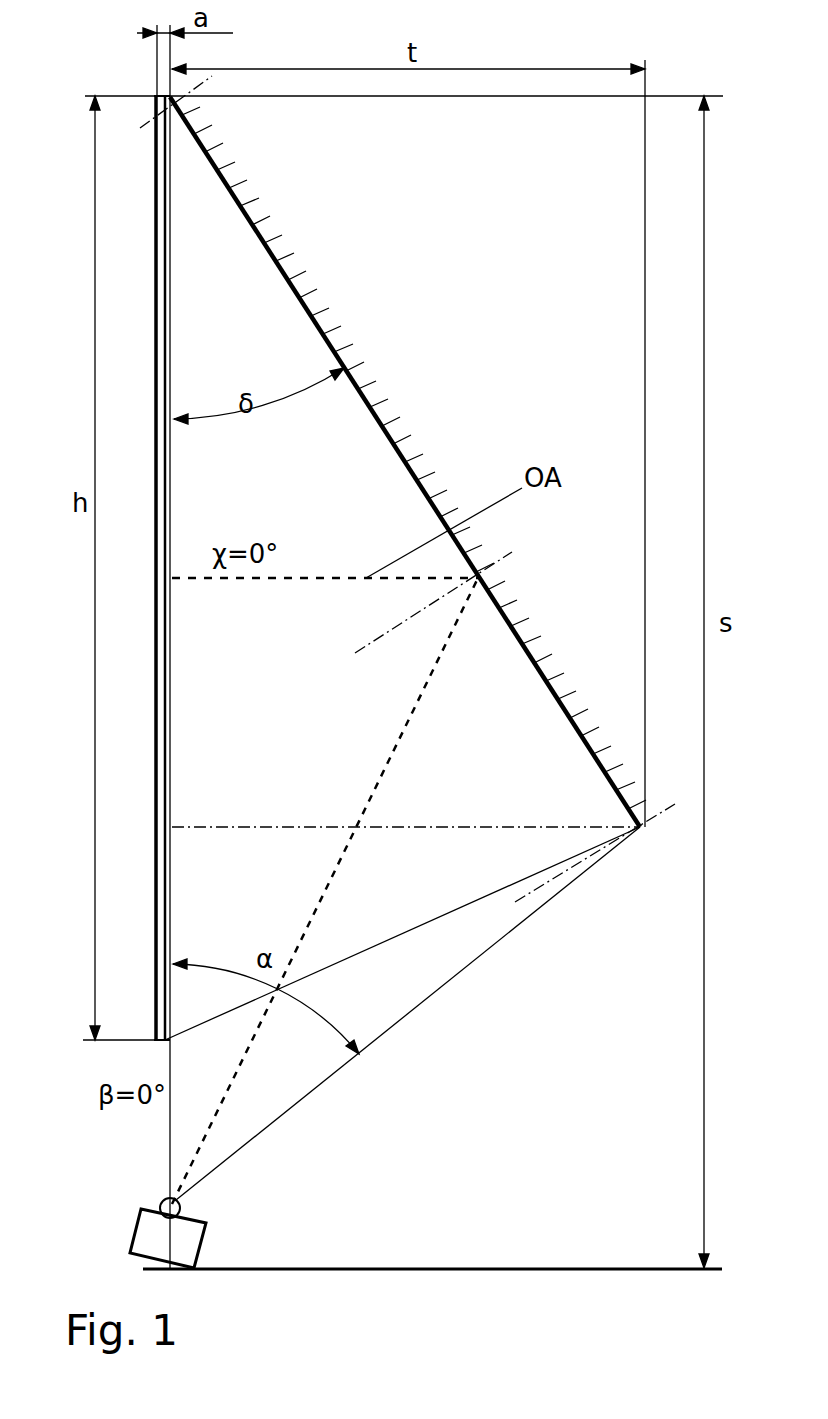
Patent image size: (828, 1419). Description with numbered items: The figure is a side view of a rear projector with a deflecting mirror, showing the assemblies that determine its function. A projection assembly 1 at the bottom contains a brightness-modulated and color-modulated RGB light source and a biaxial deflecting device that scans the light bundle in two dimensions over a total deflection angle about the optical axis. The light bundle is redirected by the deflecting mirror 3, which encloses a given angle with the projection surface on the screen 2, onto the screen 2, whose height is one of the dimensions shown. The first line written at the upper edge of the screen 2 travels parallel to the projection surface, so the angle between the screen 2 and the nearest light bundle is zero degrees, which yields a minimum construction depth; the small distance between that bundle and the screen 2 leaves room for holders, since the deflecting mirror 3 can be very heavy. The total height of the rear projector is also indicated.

The projection assembly 1 is at (205, 1235).
The screen 2 is at (155, 683).
The deflecting mirror 3 is at (372, 405).